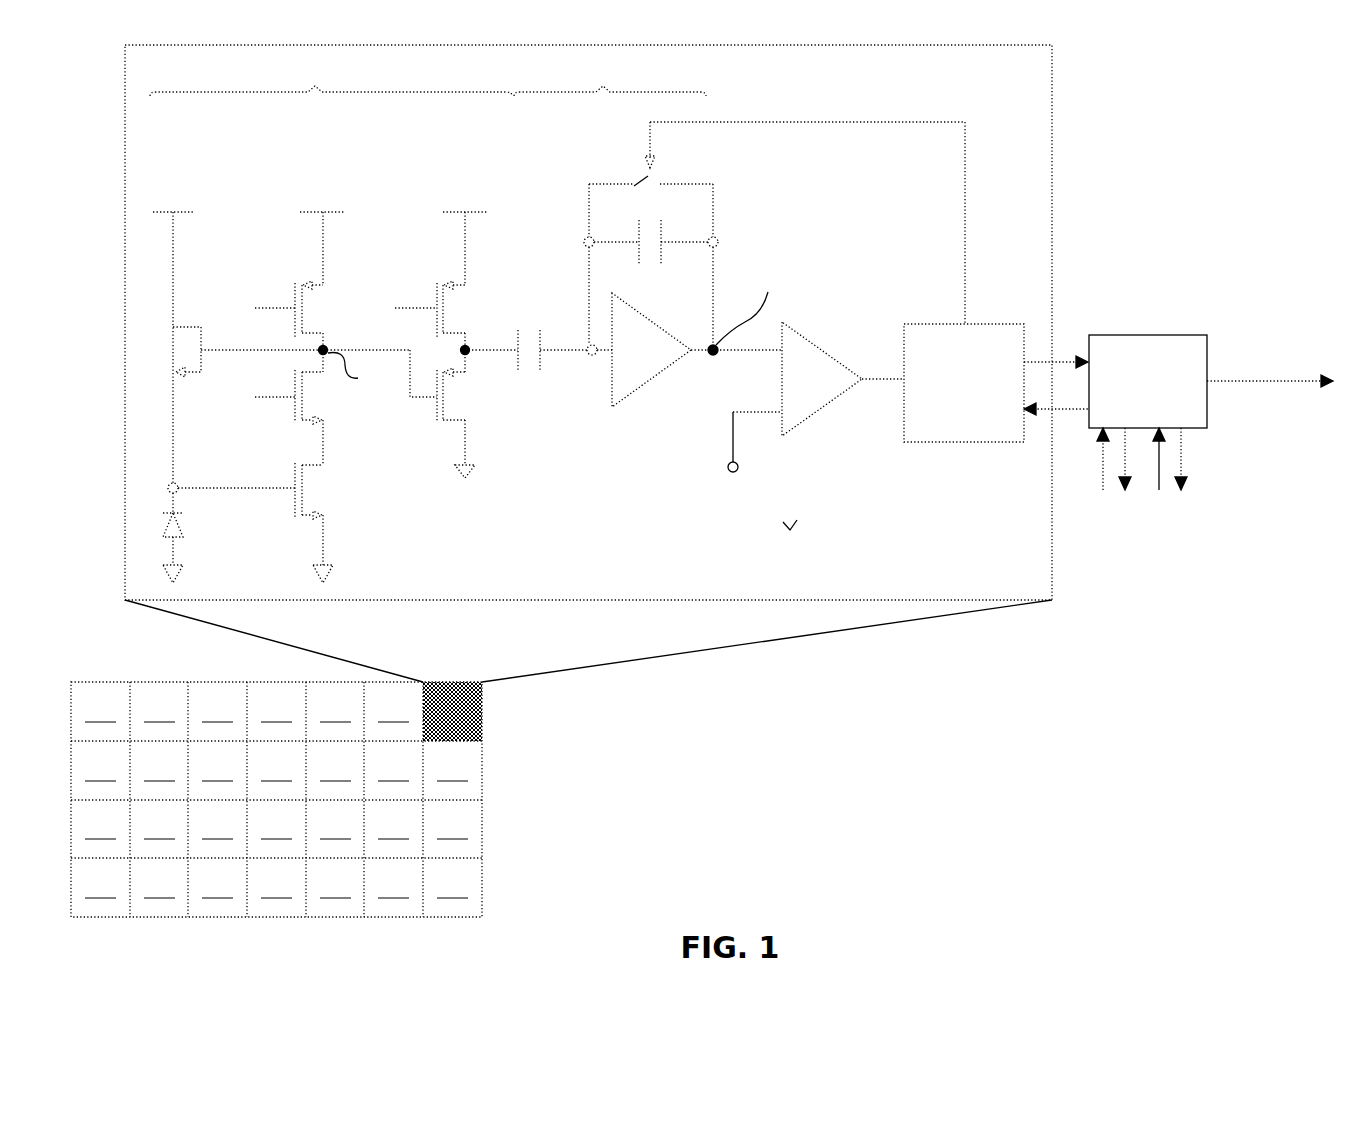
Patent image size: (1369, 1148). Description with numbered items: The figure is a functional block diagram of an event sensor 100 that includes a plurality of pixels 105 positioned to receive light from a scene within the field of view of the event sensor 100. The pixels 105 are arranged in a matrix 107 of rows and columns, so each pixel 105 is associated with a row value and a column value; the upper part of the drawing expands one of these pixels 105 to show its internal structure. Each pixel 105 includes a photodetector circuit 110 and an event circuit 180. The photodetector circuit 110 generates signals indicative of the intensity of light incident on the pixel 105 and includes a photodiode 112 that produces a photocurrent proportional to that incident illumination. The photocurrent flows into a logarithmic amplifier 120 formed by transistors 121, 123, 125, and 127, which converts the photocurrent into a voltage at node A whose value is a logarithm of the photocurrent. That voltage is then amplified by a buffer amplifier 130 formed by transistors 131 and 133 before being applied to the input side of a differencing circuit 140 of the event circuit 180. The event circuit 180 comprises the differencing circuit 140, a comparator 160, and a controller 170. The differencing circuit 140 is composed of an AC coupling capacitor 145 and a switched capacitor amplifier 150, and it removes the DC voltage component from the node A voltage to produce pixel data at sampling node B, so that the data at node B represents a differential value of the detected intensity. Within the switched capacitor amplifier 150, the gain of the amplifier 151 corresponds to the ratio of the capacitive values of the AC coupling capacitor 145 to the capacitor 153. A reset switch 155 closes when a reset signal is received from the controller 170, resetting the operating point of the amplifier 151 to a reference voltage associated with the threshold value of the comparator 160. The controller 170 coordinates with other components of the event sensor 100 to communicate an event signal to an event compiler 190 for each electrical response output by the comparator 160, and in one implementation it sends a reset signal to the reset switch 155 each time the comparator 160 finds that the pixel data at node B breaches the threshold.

The event sensor 100 is at (1190, 85).
The pixel 105 is at (986, 82).
The matrix 107 is at (482, 858).
The photodetector circuit 110 is at (331, 77).
The photodiode 112 is at (183, 528).
The logarithmic amplifier 120 is at (258, 254).
The transistor 121 is at (176, 361).
The transistor 123 is at (341, 323).
The transistor 125 is at (341, 409).
The transistor 127 is at (341, 503).
The buffer amplifier 130 is at (486, 268).
The transistor 131 is at (483, 323).
The transistor 133 is at (483, 409).
The differencing circuit 140 is at (610, 77).
The AC coupling capacitor 145 is at (540, 368).
The switched capacitor amplifier 150 is at (617, 421).
The amplifier 151 is at (661, 362).
The capacitor 153 is at (661, 255).
The reset switch 155 is at (643, 180).
The comparator 160 is at (826, 391).
The controller 170 is at (948, 413).
The event circuit 180 is at (790, 538).
The event compiler 190 is at (1132, 422).